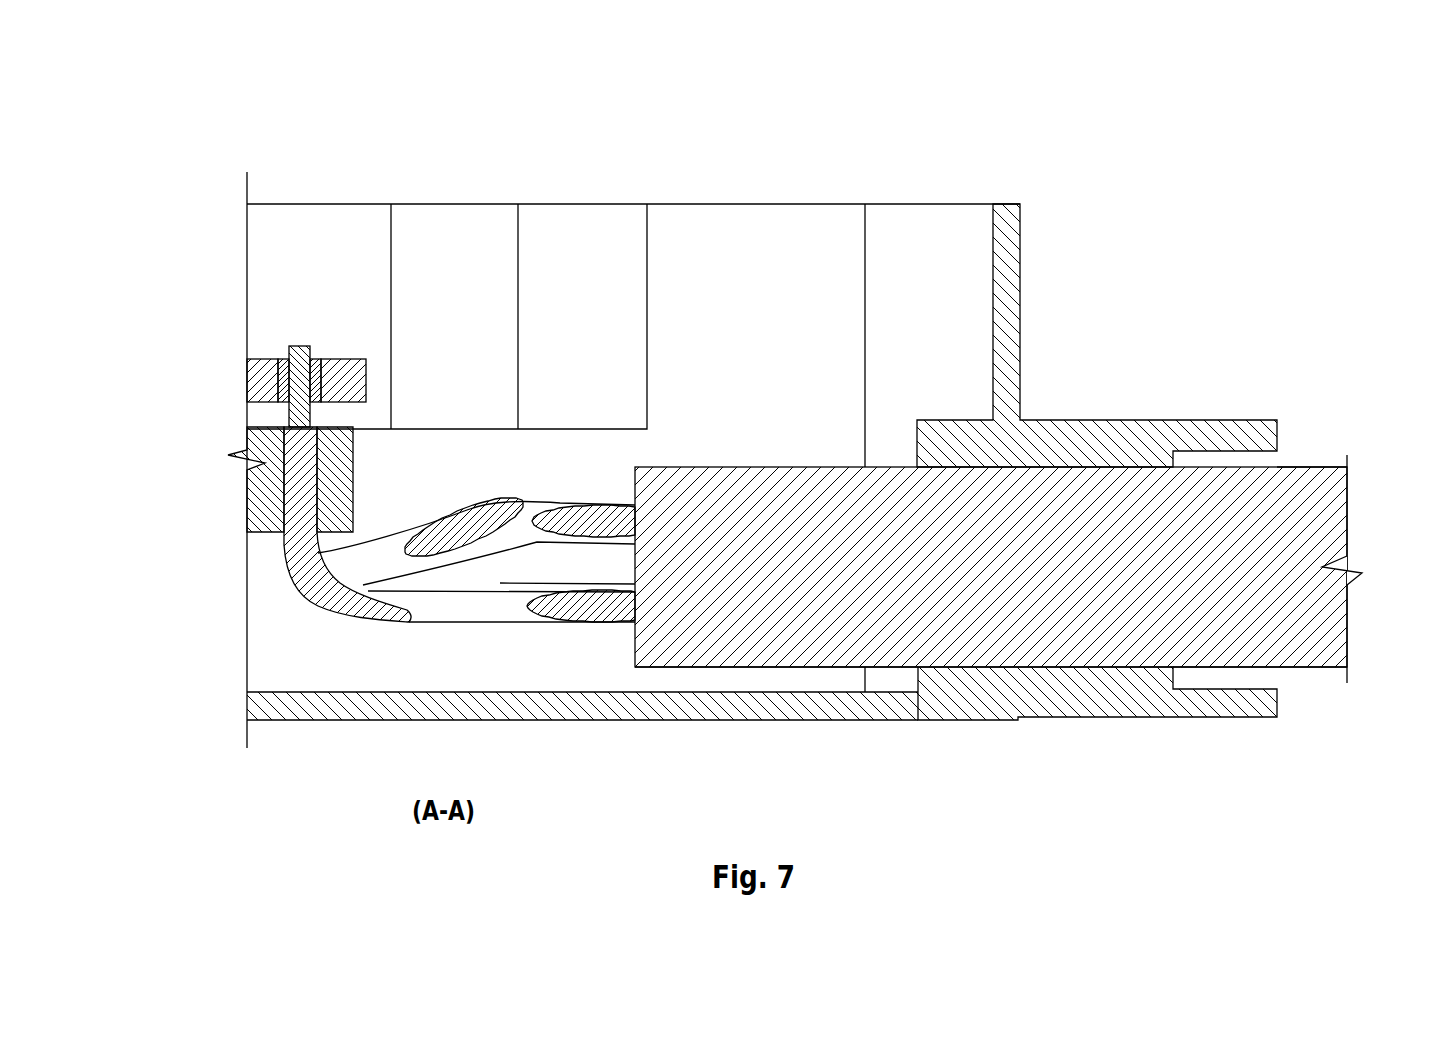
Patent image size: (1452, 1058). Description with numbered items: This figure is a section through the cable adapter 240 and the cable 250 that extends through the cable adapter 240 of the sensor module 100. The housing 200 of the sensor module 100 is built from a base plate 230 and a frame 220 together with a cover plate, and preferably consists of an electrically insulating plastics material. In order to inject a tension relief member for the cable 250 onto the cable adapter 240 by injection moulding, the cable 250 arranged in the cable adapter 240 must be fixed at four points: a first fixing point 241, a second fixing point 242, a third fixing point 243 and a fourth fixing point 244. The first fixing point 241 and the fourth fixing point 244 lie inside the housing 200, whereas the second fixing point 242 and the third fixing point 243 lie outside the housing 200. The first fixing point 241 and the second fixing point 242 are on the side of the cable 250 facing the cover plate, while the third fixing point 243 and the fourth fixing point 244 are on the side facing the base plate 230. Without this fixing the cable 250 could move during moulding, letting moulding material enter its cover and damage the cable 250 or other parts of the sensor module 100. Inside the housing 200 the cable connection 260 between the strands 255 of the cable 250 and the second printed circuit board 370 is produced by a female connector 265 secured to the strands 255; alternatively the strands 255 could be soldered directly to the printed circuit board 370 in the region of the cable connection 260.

The sensor module 100 is at (234, 90).
The housing 200 is at (762, 491).
The frame 220 is at (1010, 288).
The base plate 230 is at (640, 710).
The second printed circuit board 370 is at (253, 375).
The cable connection 260 is at (317, 353).
The female connector 265 is at (255, 508).
The strands 255 is at (500, 577).
The first fixing point 241 is at (785, 465).
The cable 250 is at (1337, 493).
The second fixing point 242 is at (1307, 466).
The third fixing point 243 is at (1300, 673).
The fourth fixing point 244 is at (780, 667).
The cable adapter 240 is at (947, 710).